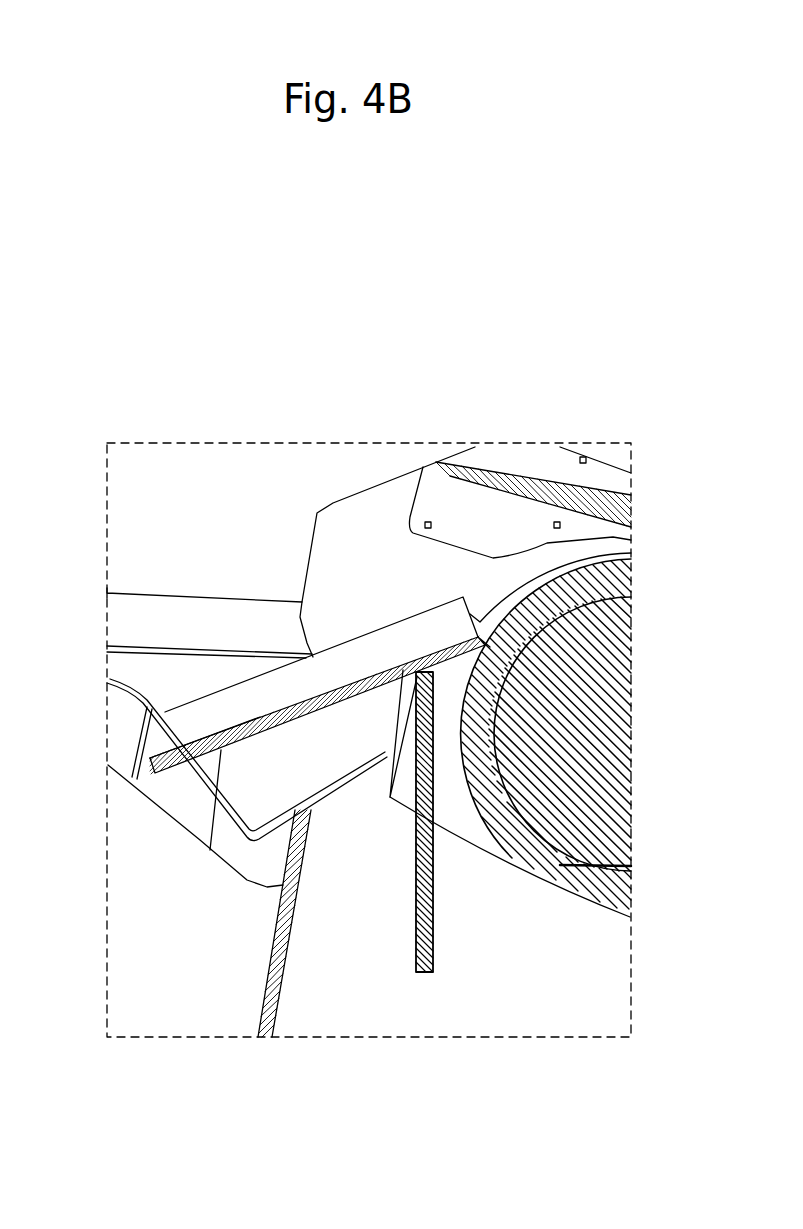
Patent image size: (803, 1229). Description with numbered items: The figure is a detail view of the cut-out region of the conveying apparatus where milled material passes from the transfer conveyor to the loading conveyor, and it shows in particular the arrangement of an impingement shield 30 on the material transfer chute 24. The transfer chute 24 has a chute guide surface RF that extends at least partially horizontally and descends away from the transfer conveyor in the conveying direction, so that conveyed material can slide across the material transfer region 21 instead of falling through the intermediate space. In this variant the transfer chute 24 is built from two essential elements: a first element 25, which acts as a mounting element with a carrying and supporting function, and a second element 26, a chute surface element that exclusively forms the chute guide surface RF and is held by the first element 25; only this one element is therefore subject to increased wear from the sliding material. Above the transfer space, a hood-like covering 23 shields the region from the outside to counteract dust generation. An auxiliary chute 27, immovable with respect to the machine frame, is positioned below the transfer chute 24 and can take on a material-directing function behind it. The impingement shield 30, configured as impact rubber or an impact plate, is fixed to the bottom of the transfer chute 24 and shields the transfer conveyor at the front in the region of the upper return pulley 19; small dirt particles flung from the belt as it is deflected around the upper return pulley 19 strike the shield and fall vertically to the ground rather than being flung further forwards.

The upper return pulley 19 is at (603, 730).
The material transfer region 21 is at (370, 858).
The hood-like covering 23 is at (247, 492).
The material transfer chute 24 is at (326, 592).
The first element 25 is at (367, 692).
The second element 26 is at (268, 728).
The auxiliary chute 27 is at (260, 785).
The impingement shield 30 is at (433, 882).
The chute guide surface RF is at (235, 737).